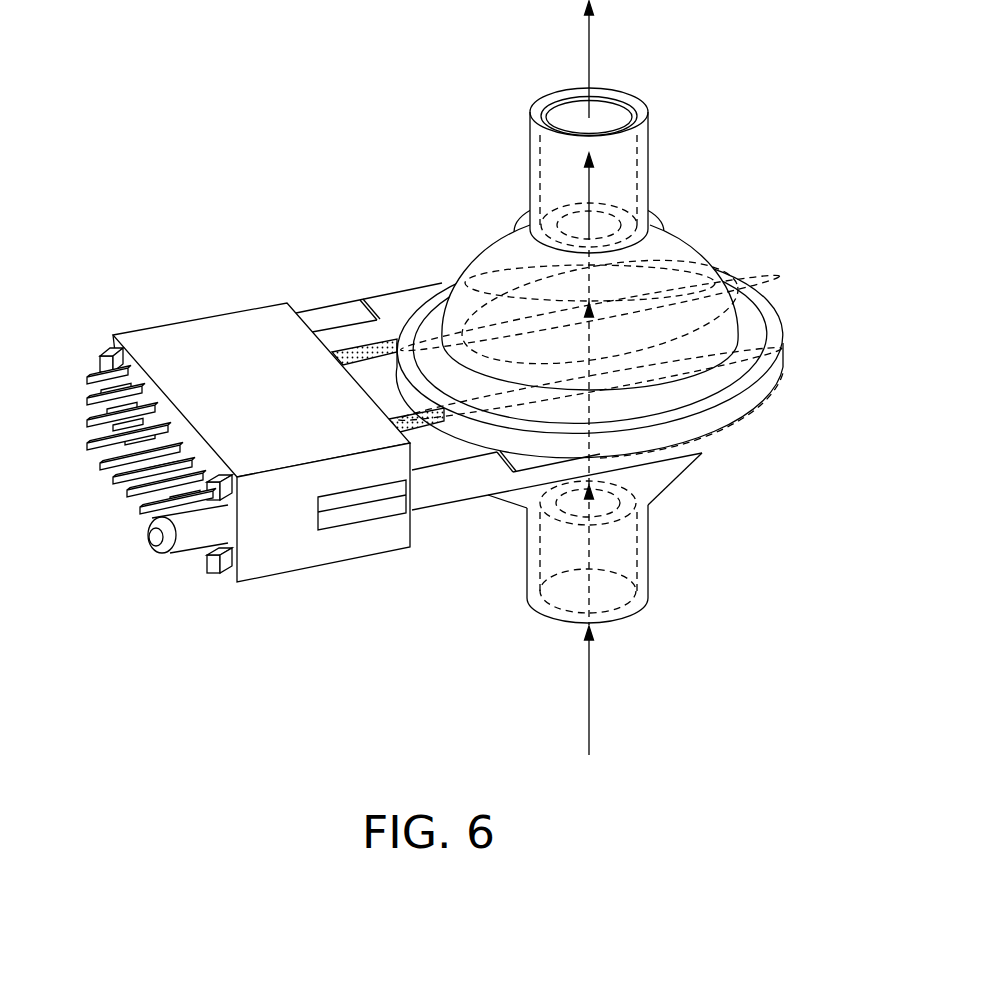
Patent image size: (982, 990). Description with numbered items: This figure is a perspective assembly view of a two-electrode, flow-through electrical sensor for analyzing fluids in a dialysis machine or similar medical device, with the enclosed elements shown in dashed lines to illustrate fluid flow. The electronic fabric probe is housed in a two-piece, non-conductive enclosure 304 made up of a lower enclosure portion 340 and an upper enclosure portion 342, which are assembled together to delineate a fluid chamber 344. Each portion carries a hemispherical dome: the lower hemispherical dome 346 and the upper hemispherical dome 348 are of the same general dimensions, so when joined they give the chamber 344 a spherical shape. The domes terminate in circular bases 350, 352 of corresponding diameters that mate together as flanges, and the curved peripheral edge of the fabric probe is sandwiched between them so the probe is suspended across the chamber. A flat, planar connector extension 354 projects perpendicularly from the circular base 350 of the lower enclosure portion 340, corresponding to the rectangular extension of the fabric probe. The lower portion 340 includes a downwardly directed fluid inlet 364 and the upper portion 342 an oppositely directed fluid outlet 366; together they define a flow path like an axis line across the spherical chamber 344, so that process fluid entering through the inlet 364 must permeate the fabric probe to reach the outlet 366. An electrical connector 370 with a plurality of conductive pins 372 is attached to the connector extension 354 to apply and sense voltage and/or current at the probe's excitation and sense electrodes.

The enclosure 304 is at (803, 364).
The lower enclosure portion 340 is at (712, 479).
The upper enclosure portion 342 is at (763, 257).
The fluid chamber 344 is at (475, 288).
The lower hemispherical dome 346 is at (657, 482).
The upper hemispherical dome 348 is at (670, 243).
The circular base of lower dome 350 is at (763, 421).
The circular base of upper dome 352 is at (773, 306).
The connector extension 354 is at (470, 487).
The fluid inlet 364 is at (647, 587).
The fluid outlet 366 is at (533, 158).
The electrical connector 370 is at (207, 388).
The conductive pins 372 is at (148, 590).